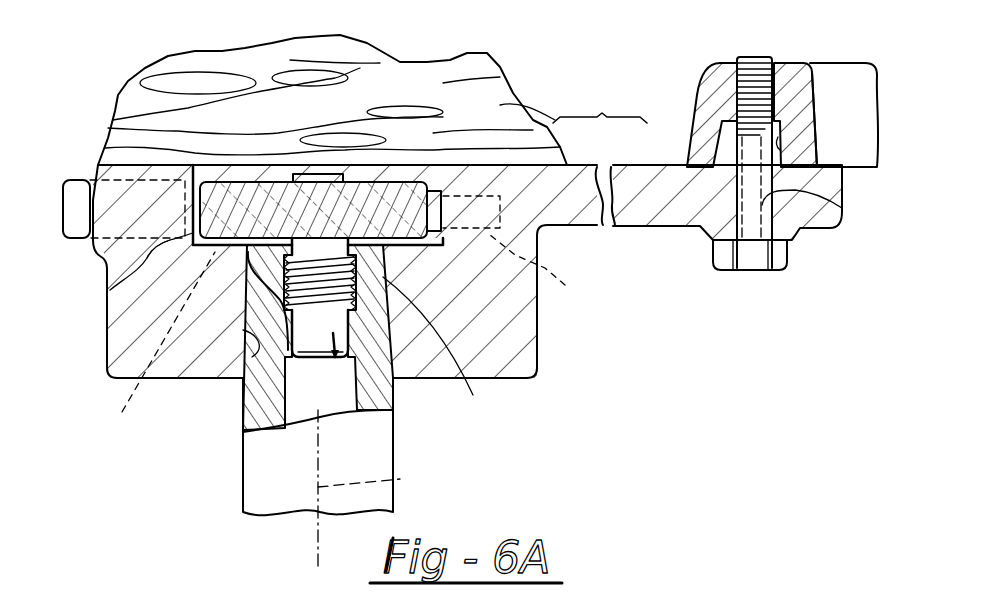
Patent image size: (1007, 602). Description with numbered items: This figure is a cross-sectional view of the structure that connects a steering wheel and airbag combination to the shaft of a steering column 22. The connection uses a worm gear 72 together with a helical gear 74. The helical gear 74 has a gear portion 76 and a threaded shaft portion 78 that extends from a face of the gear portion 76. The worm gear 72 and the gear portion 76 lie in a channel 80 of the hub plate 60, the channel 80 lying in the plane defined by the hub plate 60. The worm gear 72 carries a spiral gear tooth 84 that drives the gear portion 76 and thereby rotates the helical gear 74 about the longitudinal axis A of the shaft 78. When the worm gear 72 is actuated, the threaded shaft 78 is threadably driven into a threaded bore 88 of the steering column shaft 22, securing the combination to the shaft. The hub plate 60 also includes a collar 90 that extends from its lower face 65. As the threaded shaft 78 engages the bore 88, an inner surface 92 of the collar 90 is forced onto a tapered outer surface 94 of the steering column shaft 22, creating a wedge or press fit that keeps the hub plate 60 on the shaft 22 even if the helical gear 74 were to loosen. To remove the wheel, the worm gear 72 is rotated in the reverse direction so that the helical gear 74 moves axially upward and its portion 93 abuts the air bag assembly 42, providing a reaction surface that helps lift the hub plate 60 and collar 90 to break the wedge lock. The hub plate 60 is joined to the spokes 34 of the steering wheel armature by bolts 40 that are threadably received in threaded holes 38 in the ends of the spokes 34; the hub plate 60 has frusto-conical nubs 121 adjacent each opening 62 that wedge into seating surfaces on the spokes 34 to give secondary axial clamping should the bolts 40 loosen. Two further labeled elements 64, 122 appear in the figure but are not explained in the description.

The steering column shaft 22 is at (267, 473).
The spokes of steering wheel armature 34 is at (814, 74).
The threaded holes 38 is at (746, 90).
The bolts 40 is at (750, 273).
The air bag assembly 42 is at (195, 98).
The hub plate 60 is at (684, 242).
The opening 62 is at (842, 213).
The clamp assembly 64 is at (78, 159).
The lower face 65 is at (598, 232).
The worm gear 72 is at (544, 270).
The helical gear 74 is at (336, 357).
The gear portion 76 is at (227, 220).
The threaded shaft portion 78 is at (473, 395).
The channel 80 is at (400, 178).
The spiral gear tooth 84 is at (148, 342).
The threaded bore 88 is at (383, 257).
The collar 90 is at (523, 358).
The inner surface 92 is at (243, 393).
The portion 93 is at (323, 175).
The tapered outer surface 94 is at (295, 318).
The nubs 121 is at (723, 137).
The right bracket portion 122 is at (781, 148).
The longitudinal axis A is at (400, 479).